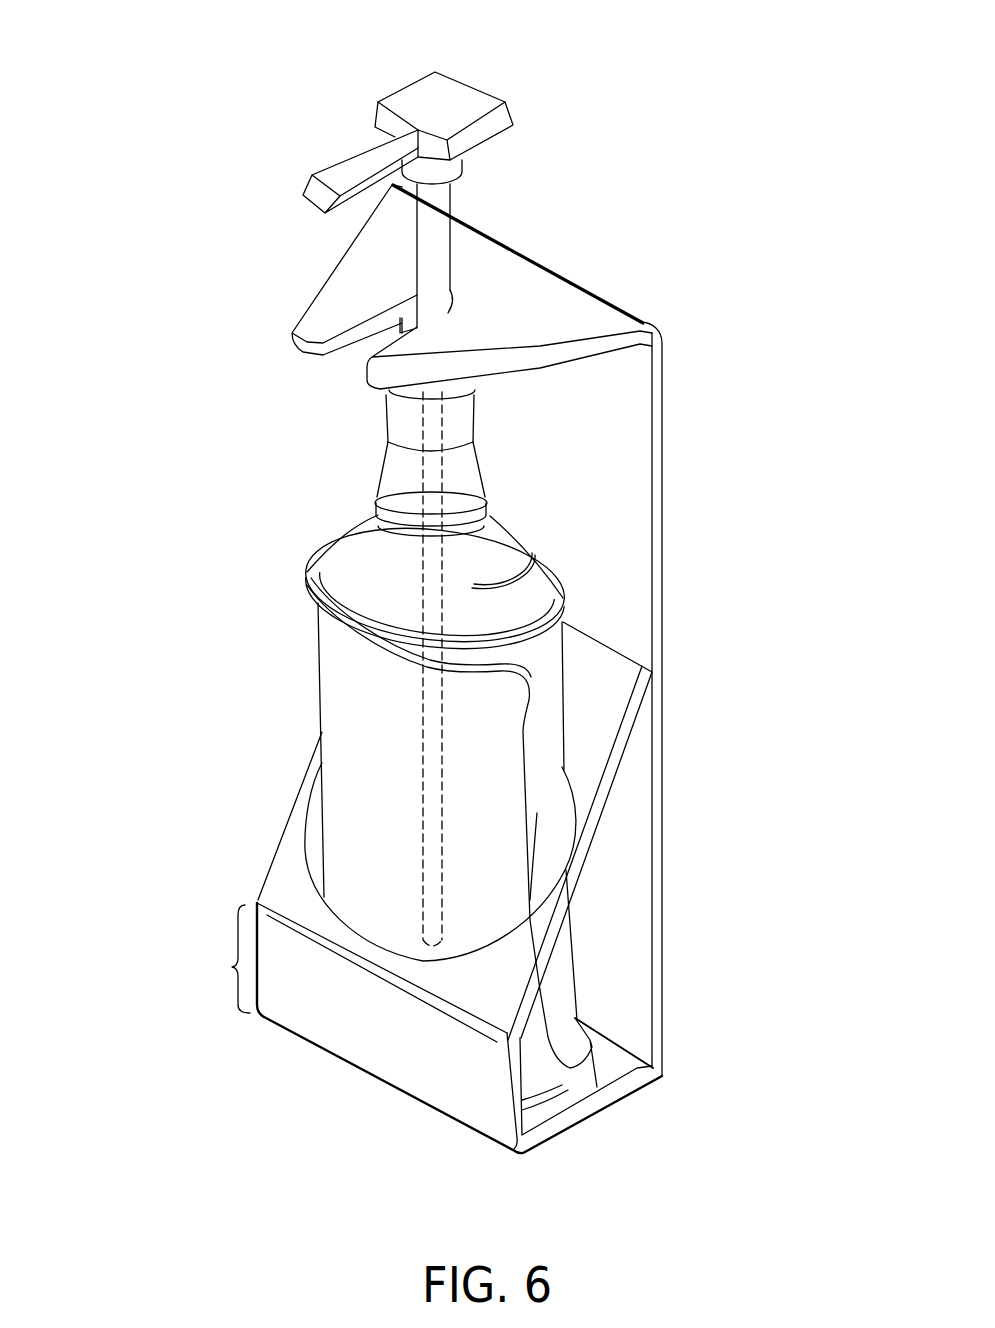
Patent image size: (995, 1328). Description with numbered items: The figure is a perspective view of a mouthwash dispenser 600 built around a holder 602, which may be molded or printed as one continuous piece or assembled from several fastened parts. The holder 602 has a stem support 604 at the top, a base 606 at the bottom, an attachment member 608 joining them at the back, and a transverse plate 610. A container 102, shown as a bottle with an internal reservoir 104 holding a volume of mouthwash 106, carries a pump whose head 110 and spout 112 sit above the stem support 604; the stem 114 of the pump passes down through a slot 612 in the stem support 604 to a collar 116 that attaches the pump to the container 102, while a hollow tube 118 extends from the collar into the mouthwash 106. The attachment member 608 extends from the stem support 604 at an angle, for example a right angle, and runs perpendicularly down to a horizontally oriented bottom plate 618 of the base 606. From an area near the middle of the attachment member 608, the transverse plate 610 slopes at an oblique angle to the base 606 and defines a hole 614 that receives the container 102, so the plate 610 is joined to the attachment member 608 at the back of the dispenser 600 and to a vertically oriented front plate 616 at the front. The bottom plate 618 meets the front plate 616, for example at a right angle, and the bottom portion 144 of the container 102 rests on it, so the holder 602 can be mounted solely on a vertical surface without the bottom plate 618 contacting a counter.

The mouthwash dispenser 600 is at (700, 216).
The holder 602 is at (715, 514).
The stem support 604 is at (347, 284).
The base 606 is at (237, 968).
The attachment member 608 is at (620, 413).
The transverse plate 610 is at (620, 690).
The slot 612 is at (331, 375).
The hole 614 is at (595, 801).
The front plate 616 is at (368, 1035).
The bottom plate 618 is at (625, 1062).
The bottom portion 144 is at (552, 1102).
The container 102 is at (325, 673).
The internal reservoir 104 is at (362, 738).
The mouthwash 106 is at (357, 817).
The head 110 is at (448, 89).
The spout 112 is at (292, 193).
The stem 114 is at (438, 257).
The collar 116 is at (395, 403).
The hollow tube 118 is at (423, 573).